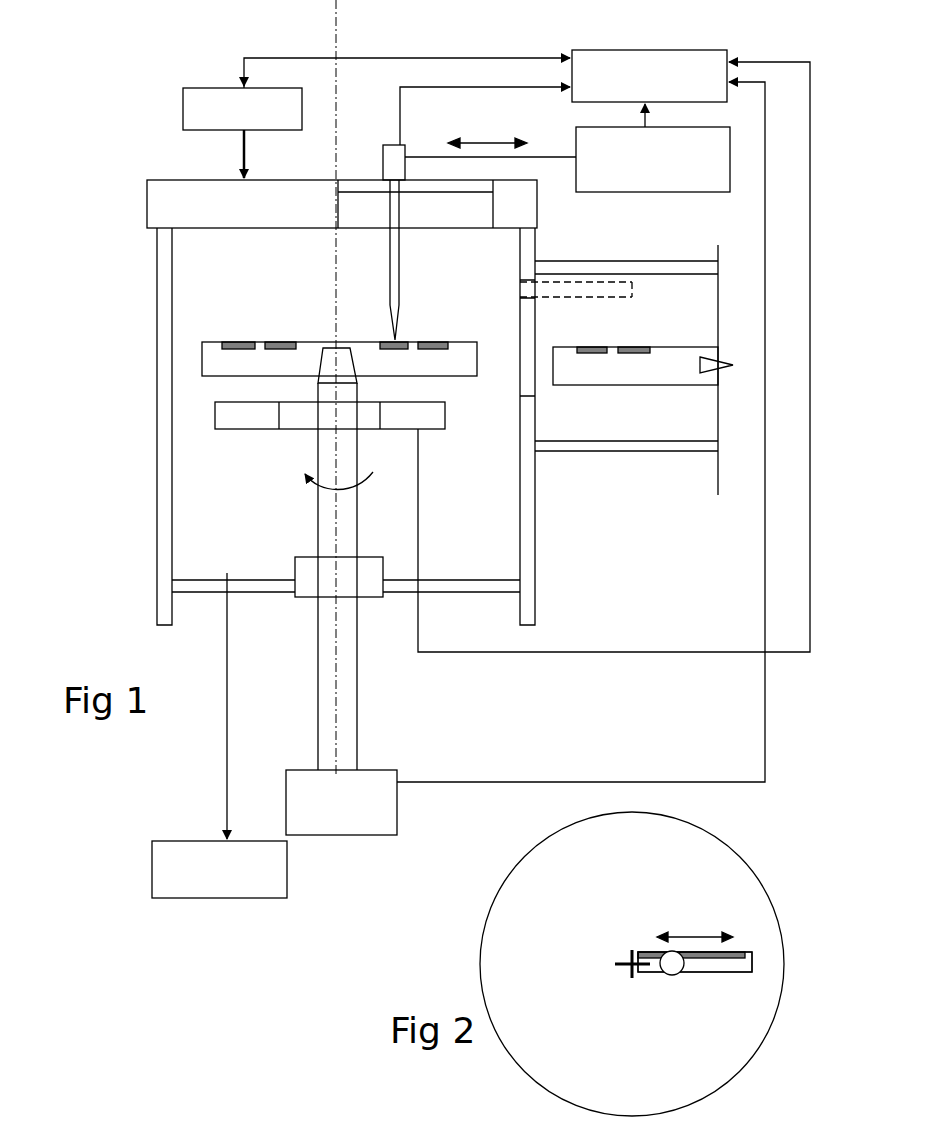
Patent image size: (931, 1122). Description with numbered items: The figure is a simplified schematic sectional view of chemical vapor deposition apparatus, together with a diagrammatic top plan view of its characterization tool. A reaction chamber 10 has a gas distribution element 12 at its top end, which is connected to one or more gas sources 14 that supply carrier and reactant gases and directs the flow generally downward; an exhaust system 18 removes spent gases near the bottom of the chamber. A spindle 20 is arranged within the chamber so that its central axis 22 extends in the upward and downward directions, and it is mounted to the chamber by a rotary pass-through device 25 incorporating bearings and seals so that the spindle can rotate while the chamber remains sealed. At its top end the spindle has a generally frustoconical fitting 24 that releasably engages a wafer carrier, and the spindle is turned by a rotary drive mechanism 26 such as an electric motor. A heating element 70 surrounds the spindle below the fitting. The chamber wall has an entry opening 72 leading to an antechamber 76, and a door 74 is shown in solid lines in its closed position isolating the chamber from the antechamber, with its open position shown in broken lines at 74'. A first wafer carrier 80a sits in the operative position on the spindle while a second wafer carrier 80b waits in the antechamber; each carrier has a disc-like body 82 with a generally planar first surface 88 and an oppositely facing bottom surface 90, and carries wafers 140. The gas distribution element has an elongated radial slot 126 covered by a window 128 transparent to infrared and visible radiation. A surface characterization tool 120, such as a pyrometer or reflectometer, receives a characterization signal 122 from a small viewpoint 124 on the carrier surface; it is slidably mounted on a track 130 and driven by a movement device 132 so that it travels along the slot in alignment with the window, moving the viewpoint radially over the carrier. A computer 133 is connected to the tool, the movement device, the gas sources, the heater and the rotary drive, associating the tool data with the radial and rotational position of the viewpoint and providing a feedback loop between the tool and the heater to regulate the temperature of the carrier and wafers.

In FIG. 1, the reaction chamber 10 is at (154, 542).
In FIG. 1, the gas distribution element 12 is at (143, 197).
In FIG. 1, the gas source 14 is at (228, 86).
In FIG. 1, the exhaust system 18 is at (200, 840).
In FIG. 1, the spindle 20 is at (314, 493).
In FIG. 1, the central axis 22 is at (336, 88).
In FIG. 1, the fitting 24 is at (317, 383).
In FIG. 1, the rotary pass-through device 25 is at (373, 580).
In FIG. 1, the rotary drive mechanism 26 is at (345, 835).
In FIG. 1, the heating element 70 is at (222, 420).
In FIG. 1, the entry opening 72 is at (515, 380).
In FIG. 1, the door 74 is at (634, 351).
In FIG. 1, the open position of door 74' is at (603, 299).
In FIG. 1, the antechamber 76 is at (697, 345).
In FIG. 1, the first wafer carrier 80a is at (198, 343).
In FIG. 1, the second wafer carrier 80b is at (692, 444).
In FIG. 1, the body 82 is at (213, 372).
In FIG. 1, the first surface 88 is at (357, 343).
In FIG. 1, the bottom surface 90 is at (433, 380).
In FIG. 1, the surface characterization tool 120 is at (388, 138).
In FIG. 2, the surface characterization tool 120 is at (660, 955).
In FIG. 1, the characterization signal 122 is at (385, 257).
In FIG. 1, the viewpoint 124 is at (400, 320).
In FIG. 1, the slot 126 is at (353, 210).
In FIG. 2, the slot 126 is at (730, 965).
In FIG. 1, the window 128 is at (377, 188).
In FIG. 2, the window 128 is at (730, 965).
In FIG. 2, the track 130 is at (640, 950).
In FIG. 1, the movement device 132 is at (675, 188).
In FIG. 1, the computer 133 is at (695, 65).
In FIG. 1, the wafers 140 is at (437, 343).